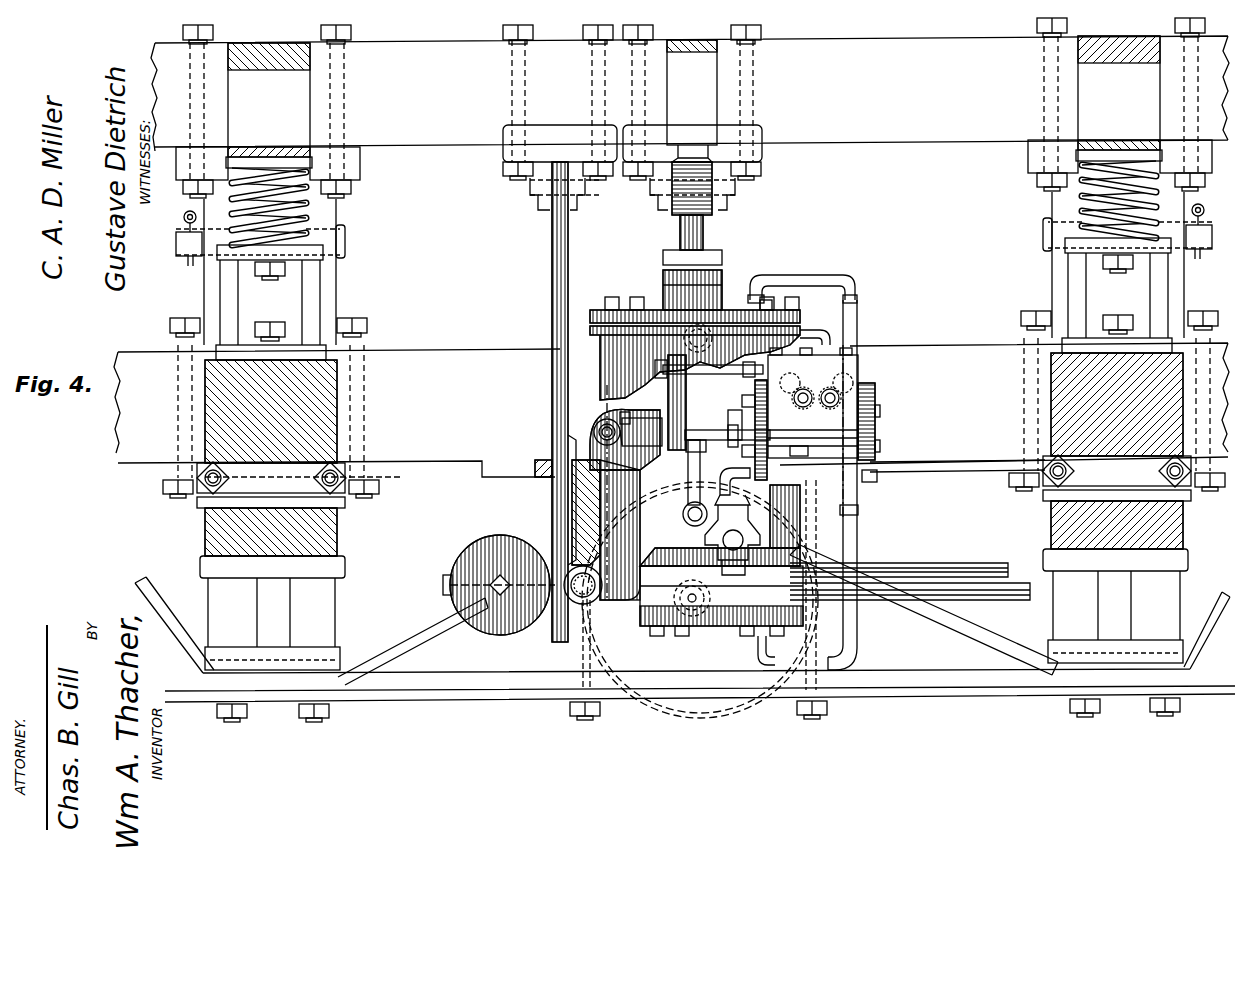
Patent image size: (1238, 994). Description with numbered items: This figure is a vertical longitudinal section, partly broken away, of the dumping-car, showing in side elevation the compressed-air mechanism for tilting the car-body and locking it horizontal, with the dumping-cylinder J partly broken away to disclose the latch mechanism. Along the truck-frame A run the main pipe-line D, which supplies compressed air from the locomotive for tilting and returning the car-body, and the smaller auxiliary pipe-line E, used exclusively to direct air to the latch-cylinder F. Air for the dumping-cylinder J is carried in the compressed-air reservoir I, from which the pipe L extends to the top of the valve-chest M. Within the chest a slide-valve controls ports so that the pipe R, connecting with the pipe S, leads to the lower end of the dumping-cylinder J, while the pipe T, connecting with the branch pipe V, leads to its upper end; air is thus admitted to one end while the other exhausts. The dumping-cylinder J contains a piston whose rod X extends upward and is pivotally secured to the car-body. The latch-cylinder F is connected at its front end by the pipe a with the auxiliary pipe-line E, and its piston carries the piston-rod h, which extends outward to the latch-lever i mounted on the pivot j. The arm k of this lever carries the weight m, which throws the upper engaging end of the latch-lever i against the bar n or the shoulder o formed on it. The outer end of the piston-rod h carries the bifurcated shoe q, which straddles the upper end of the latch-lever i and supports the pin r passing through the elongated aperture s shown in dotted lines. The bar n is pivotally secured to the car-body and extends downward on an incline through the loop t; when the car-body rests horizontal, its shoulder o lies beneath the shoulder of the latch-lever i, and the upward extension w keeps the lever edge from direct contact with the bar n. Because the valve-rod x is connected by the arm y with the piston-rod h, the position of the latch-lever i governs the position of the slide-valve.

The bar n is at (572, 236).
The piston-rod X is at (704, 240).
The dumping-cylinder J is at (626, 298).
The branch pipe V is at (805, 282).
The pipe L is at (812, 328).
The valve-chest M is at (813, 432).
The pipe T is at (800, 407).
The pipe R is at (830, 407).
The latch-cylinder F is at (876, 430).
The valve-rod x is at (716, 374).
The piston-rod h is at (716, 428).
The arm y is at (681, 403).
The latch-lever i is at (614, 412).
The elongated aperture s is at (620, 424).
The bifurcated shoe q is at (642, 432).
The pin r is at (636, 445).
The upward extension w is at (552, 437).
The loop t is at (535, 478).
The shoulder o is at (572, 490).
The weight m is at (500, 545).
The arm k is at (443, 585).
The pivot j is at (568, 600).
The compressed-air reservoir I is at (668, 490).
The truck-frame A is at (726, 447).
The pipe a is at (732, 540).
The pipe S is at (858, 520).
The auxiliary pipe-line E is at (935, 563).
The main pipe-line D is at (1010, 593).